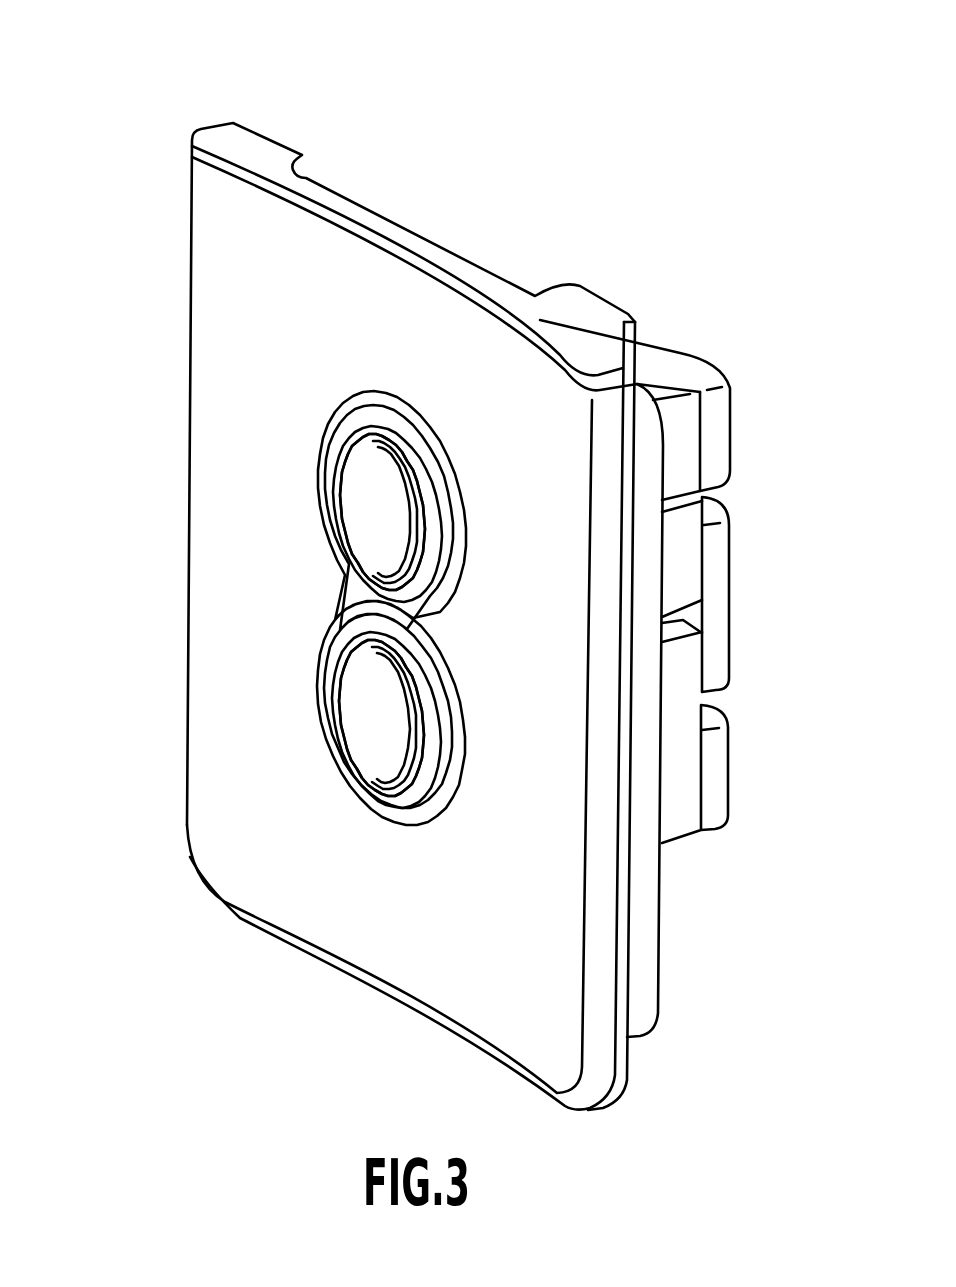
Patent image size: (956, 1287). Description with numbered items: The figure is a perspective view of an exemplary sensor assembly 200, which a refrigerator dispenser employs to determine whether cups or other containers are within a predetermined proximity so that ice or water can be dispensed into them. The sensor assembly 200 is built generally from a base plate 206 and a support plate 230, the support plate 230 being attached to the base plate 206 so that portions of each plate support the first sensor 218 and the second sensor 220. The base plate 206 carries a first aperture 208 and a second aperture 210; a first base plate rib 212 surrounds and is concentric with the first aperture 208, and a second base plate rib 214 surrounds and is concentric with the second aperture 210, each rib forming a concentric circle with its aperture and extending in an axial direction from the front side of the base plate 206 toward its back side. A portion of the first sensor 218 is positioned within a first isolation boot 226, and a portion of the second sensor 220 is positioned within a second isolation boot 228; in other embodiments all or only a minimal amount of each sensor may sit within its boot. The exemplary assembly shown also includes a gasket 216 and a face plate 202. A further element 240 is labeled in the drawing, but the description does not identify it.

The sensor assembly 200 is at (200, 78).
The face plate 202 is at (221, 311).
The base plate 206 is at (595, 355).
The first aperture 208 is at (376, 490).
The second aperture 210 is at (371, 712).
The first base plate rib 212 is at (333, 453).
The second base plate rib 214 is at (333, 657).
The gasket 216 is at (645, 943).
The first sensor 218 is at (360, 522).
The second sensor 220 is at (352, 728).
The first isolation boot 226 is at (365, 432).
The second isolation boot 228 is at (367, 632).
The support plate 230 is at (695, 363).
The gap 240 is at (733, 492).